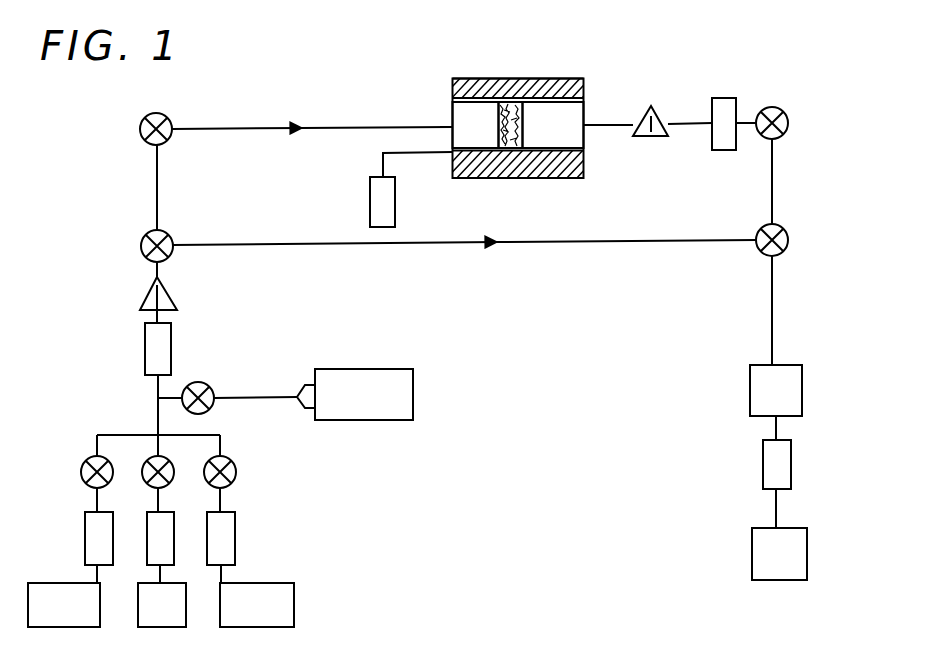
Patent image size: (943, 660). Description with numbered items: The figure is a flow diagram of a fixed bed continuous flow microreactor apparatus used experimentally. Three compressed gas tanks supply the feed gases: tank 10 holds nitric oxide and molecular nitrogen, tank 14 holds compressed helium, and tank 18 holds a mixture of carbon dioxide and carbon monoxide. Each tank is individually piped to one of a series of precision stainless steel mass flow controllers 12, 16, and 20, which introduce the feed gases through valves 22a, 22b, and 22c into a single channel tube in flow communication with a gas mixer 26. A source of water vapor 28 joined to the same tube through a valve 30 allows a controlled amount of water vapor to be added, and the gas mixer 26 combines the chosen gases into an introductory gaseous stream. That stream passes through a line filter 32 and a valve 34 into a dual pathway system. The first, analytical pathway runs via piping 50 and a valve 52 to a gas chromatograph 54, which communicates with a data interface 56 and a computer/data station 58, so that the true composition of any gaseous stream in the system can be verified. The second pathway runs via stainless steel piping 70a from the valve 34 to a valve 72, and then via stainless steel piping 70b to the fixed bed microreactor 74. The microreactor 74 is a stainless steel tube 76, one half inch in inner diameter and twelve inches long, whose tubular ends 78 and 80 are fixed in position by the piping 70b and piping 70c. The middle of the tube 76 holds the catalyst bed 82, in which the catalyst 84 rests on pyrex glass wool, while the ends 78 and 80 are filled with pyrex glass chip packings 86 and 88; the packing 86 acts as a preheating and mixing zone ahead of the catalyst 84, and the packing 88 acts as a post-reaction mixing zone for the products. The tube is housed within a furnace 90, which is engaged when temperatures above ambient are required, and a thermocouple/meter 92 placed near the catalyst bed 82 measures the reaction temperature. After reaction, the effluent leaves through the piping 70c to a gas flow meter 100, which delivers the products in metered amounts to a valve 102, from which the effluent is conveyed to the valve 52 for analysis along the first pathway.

The compressed gas tank 10 is at (64, 605).
The mass flow controller 12 is at (85, 532).
The compressed gas tank 14 is at (162, 605).
The mass flow controller 16 is at (147, 522).
The compressed gas tank 18 is at (257, 605).
The mass flow controller 20 is at (235, 533).
The valve 22a is at (84, 461).
The valve 22b is at (150, 460).
The valve 22c is at (234, 463).
The gas mixer 26 is at (145, 335).
The source of water vapor 28 is at (355, 394).
The valve 30 is at (206, 381).
The line filter 32 is at (170, 296).
The valve 34 is at (142, 238).
The piping 50 is at (549, 243).
The valve 52 is at (785, 228).
The gas chromatograph 54 is at (776, 336).
The data interface 56 is at (763, 464).
The computer/data station 58 is at (779, 554).
The stainless steel piping 70a is at (157, 178).
The stainless steel piping 70b is at (318, 124).
The piping 70c is at (607, 124).
The valve 72 is at (142, 122).
The fixed bed microreactor 74 is at (449, 74).
The stainless steel tube 76 is at (448, 103).
The tubular end 78 is at (448, 136).
The tubular end 80 is at (589, 132).
The catalyst bed 82 is at (489, 178).
The catalyst 84 is at (511, 178).
The glass chip packing 86 is at (476, 125).
The glass chip packing 88 is at (553, 125).
The furnace 90 is at (515, 80).
The thermocouple/meter 92 is at (370, 190).
The gas flow meter 100 is at (722, 98).
The valve 102 is at (785, 111).